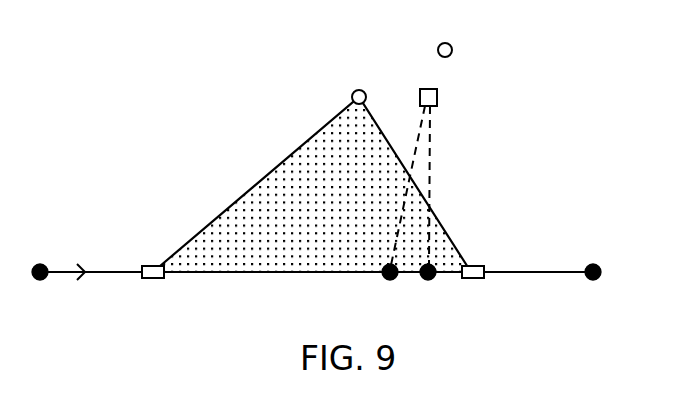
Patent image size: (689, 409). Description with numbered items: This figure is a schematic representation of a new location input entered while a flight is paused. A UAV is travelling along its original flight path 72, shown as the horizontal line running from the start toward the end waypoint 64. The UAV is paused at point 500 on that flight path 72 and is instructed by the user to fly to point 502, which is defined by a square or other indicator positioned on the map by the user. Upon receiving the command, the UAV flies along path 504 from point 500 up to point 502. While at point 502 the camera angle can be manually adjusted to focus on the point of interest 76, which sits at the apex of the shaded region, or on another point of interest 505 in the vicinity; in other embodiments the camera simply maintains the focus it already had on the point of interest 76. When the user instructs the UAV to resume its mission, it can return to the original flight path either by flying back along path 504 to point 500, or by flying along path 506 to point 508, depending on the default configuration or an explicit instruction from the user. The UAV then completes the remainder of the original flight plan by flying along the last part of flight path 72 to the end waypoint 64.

The flight path 72 is at (104, 271).
The end waypoint 64 is at (601, 267).
The point of interest 76 is at (366, 91).
The point 500 is at (381, 280).
The point 502 is at (437, 94).
The path 504 is at (419, 143).
The point of interest 505 is at (452, 44).
The path 506 is at (431, 182).
The point 508 is at (434, 283).